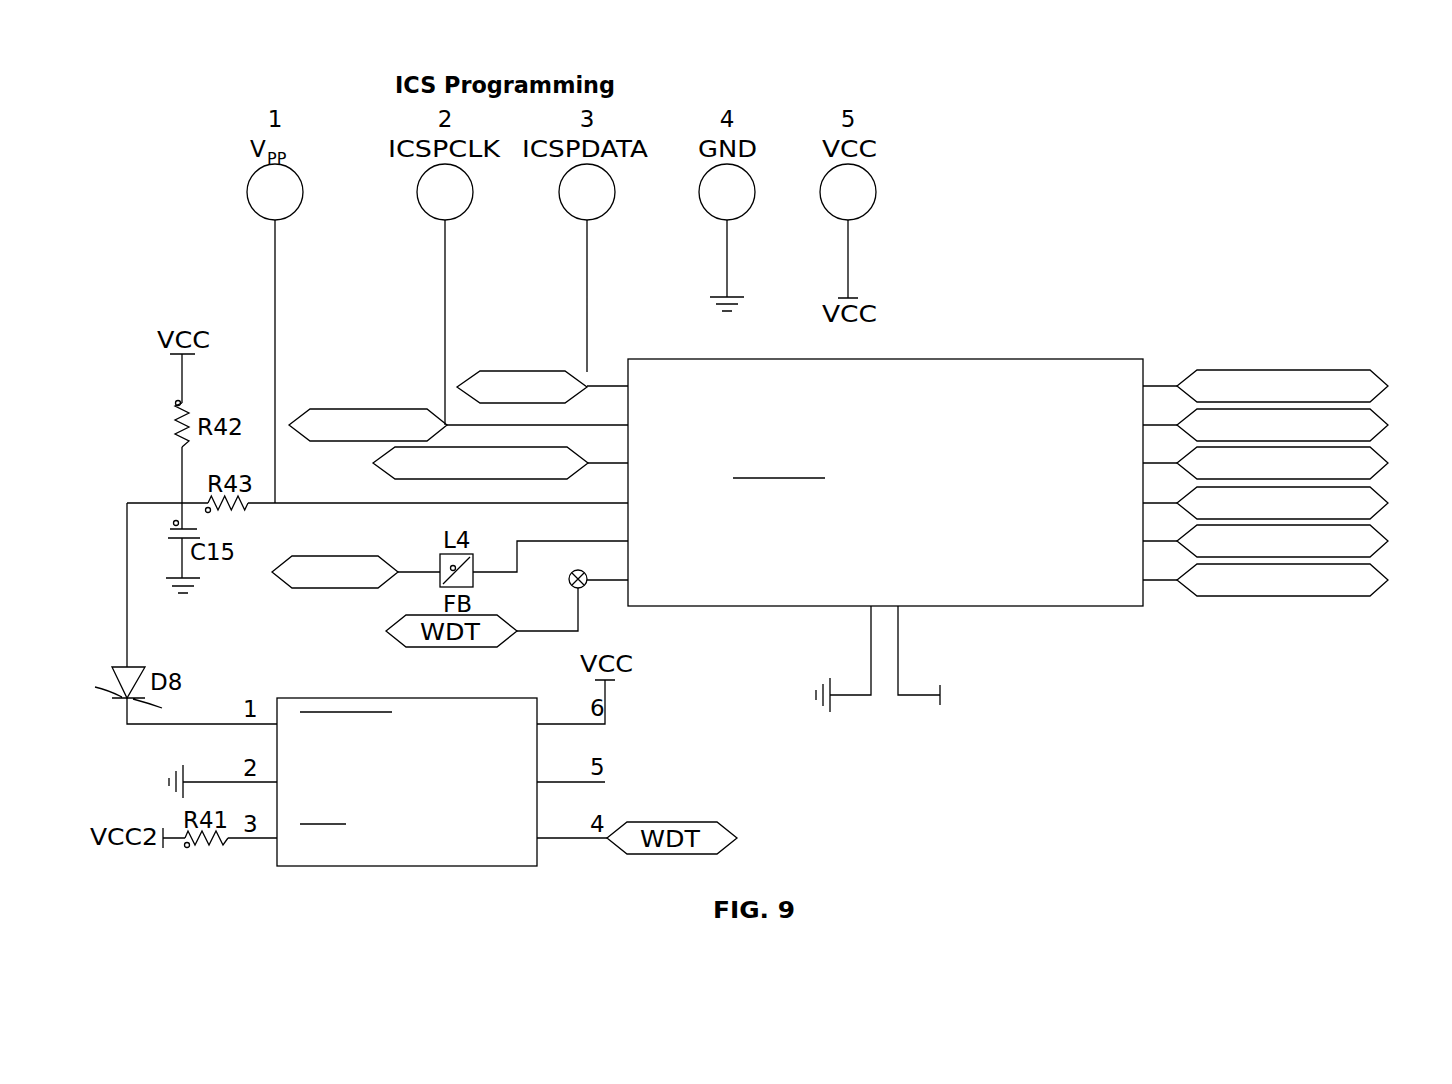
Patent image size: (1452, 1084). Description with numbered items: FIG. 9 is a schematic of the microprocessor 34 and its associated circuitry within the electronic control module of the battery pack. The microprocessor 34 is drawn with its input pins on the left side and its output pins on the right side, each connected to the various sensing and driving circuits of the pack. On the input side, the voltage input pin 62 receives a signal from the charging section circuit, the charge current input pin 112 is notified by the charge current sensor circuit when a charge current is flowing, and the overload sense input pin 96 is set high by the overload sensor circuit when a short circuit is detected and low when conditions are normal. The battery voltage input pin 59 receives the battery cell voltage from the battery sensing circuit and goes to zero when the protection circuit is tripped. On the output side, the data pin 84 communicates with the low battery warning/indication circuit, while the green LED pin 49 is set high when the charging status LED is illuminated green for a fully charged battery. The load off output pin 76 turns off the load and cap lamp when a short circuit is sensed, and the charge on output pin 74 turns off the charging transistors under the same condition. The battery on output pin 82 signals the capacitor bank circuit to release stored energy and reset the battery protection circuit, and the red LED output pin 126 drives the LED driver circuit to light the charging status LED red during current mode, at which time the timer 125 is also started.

The microprocessor 34 is at (1092, 358).
The voltage input pin Uinp 62 is at (508, 370).
The ICharge input pin 112 is at (352, 408).
The Overload Sens input pin 96 is at (371, 466).
The BAT input pin 59 is at (318, 590).
The timer 125 is at (345, 868).
The DATA1 pin 84 is at (1338, 370).
The LED_GREEN pin 49 is at (1375, 415).
The LOAD OFF output pin 76 is at (1375, 455).
The BATT ON output pin 82 is at (1375, 493).
The LED_Red output pin 126 is at (1375, 533).
The CHARGE ON output pin 74 is at (1375, 570).